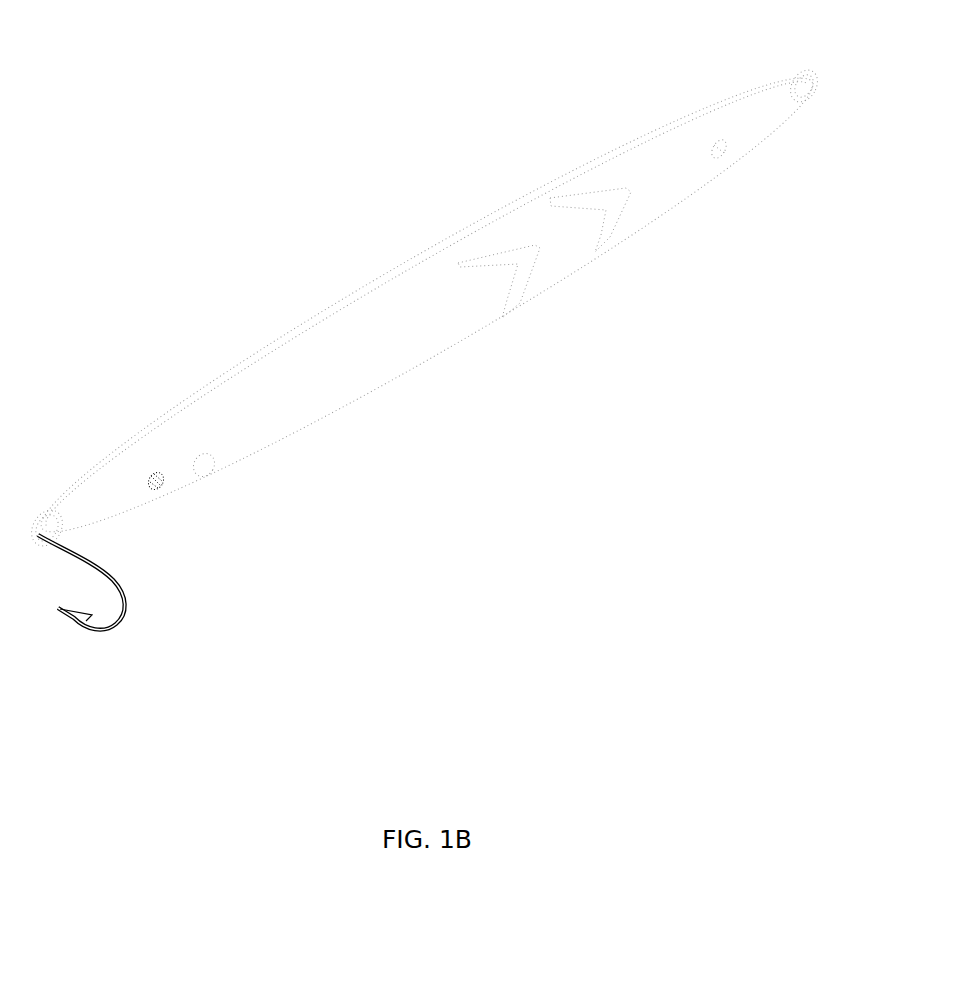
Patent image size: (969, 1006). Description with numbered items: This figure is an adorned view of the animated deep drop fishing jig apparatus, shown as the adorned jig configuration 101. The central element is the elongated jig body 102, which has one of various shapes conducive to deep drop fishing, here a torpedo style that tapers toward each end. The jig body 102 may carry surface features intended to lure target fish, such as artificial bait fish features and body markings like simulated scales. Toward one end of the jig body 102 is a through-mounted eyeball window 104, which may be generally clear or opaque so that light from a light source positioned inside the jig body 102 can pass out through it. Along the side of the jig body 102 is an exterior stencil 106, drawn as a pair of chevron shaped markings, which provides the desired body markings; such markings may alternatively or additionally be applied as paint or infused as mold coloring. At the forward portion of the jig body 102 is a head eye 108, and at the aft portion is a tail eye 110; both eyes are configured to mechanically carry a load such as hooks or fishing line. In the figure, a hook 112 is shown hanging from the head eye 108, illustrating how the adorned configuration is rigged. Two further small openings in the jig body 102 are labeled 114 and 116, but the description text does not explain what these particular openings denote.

The adorned jig configuration 101 is at (149, 50).
The jig body 102 is at (382, 273).
The through-mounted eyeball window 104 is at (210, 472).
The exterior stencil 106 is at (598, 248).
The head eye 108 is at (34, 513).
The tail eye 110 is at (799, 70).
The hook 112 is at (110, 627).
The hole 114 is at (157, 487).
The hole 116 is at (721, 160).